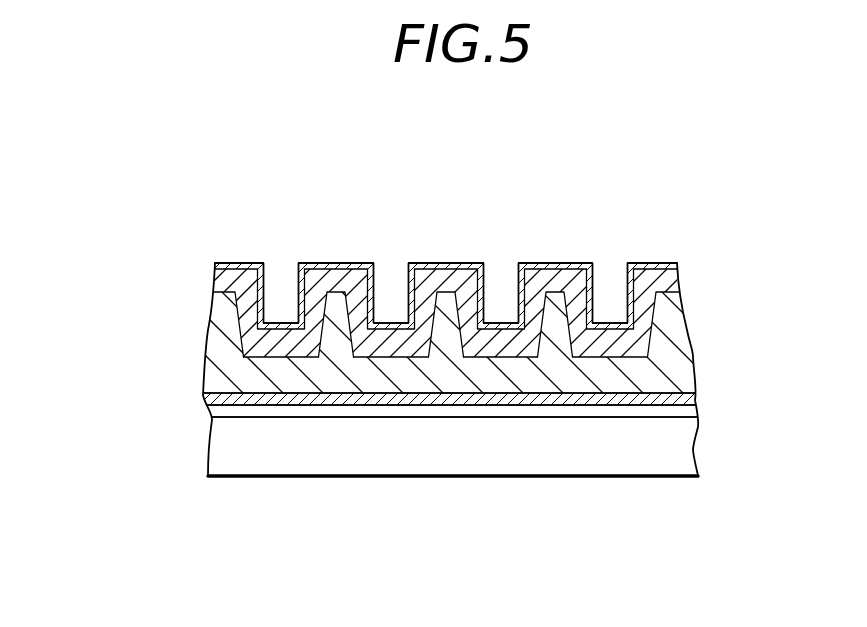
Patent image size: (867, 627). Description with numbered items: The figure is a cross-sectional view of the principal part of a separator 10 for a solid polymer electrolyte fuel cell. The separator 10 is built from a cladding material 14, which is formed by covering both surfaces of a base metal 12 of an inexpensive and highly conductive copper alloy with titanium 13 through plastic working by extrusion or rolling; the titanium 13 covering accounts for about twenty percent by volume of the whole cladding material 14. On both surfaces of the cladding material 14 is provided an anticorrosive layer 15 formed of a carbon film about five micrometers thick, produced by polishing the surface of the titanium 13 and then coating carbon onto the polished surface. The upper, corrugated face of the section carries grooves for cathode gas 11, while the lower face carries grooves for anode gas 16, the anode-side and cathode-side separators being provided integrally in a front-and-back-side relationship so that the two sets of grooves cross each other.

The separator 10 is at (203, 271).
The grooves for cathode gas 11 is at (279, 321).
The base metal 12 is at (673, 357).
The titanium 13 is at (587, 491).
The cladding material 14 is at (553, 249).
The anticorrosive layer 15 is at (443, 262).
The grooves for anode gas 16 is at (448, 440).